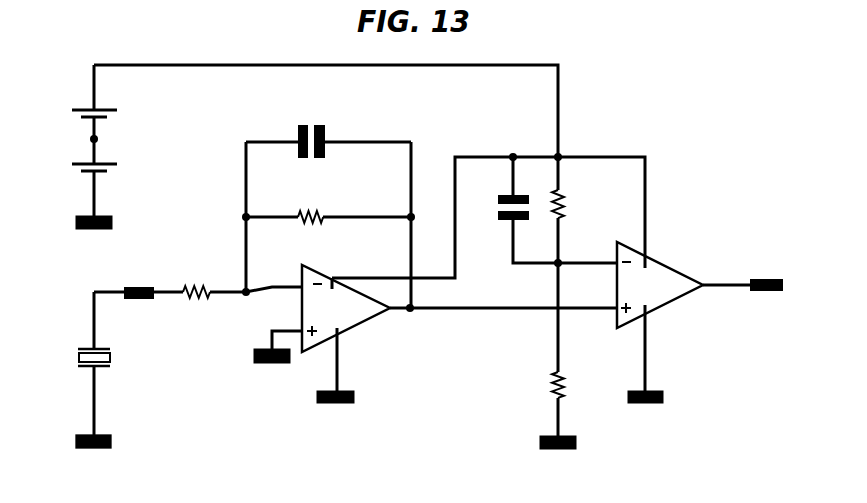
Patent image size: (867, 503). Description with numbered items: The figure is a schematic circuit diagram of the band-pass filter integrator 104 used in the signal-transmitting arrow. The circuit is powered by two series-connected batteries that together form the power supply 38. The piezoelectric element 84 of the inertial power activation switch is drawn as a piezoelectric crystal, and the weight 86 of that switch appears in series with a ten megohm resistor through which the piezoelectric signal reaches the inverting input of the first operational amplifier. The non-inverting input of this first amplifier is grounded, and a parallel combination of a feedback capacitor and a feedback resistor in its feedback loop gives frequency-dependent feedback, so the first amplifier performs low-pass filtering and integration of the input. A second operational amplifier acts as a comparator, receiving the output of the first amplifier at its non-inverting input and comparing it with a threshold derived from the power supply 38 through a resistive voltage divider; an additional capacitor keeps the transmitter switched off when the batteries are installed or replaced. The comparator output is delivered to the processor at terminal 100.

The power supply 38 is at (67, 93).
The piezoelectric element 84 is at (78, 357).
The weight 86 is at (143, 283).
The output to processor 100 is at (766, 273).
The band-pass filter integrator 104 is at (660, 105).